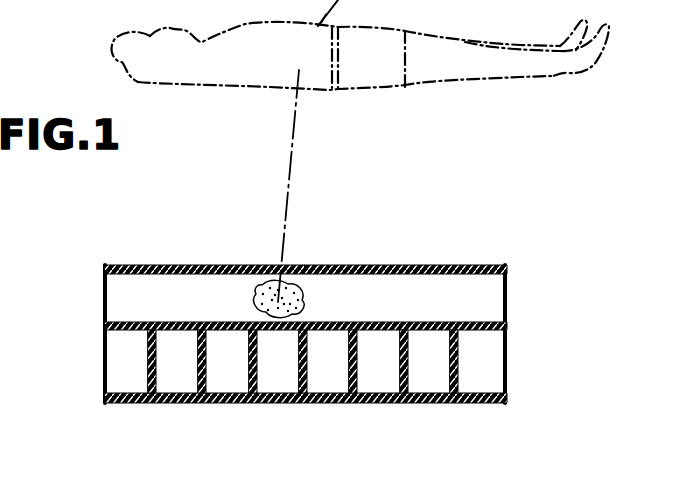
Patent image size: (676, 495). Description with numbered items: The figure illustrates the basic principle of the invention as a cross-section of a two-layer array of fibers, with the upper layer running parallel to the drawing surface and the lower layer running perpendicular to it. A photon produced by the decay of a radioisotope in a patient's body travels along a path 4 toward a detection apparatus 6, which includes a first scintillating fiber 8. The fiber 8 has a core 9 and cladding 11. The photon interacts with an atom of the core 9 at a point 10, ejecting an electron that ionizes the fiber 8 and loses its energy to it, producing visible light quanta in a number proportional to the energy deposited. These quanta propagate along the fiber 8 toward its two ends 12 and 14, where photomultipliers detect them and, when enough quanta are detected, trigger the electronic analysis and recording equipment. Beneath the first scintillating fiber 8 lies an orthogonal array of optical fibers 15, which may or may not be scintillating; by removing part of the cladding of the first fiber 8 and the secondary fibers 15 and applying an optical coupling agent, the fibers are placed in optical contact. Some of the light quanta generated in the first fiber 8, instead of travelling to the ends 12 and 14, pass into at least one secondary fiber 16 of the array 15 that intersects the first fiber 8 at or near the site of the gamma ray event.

The path 4 is at (293, 161).
The detection apparatus 6 is at (316, 323).
The first scintillating fiber 8 is at (188, 298).
The core 9 is at (140, 265).
The point 10 is at (297, 291).
The cladding 11 is at (437, 265).
The end 12 is at (105, 293).
The end 14 is at (507, 304).
The array of optical fibers 15 is at (182, 408).
The secondary fiber 16 is at (279, 378).